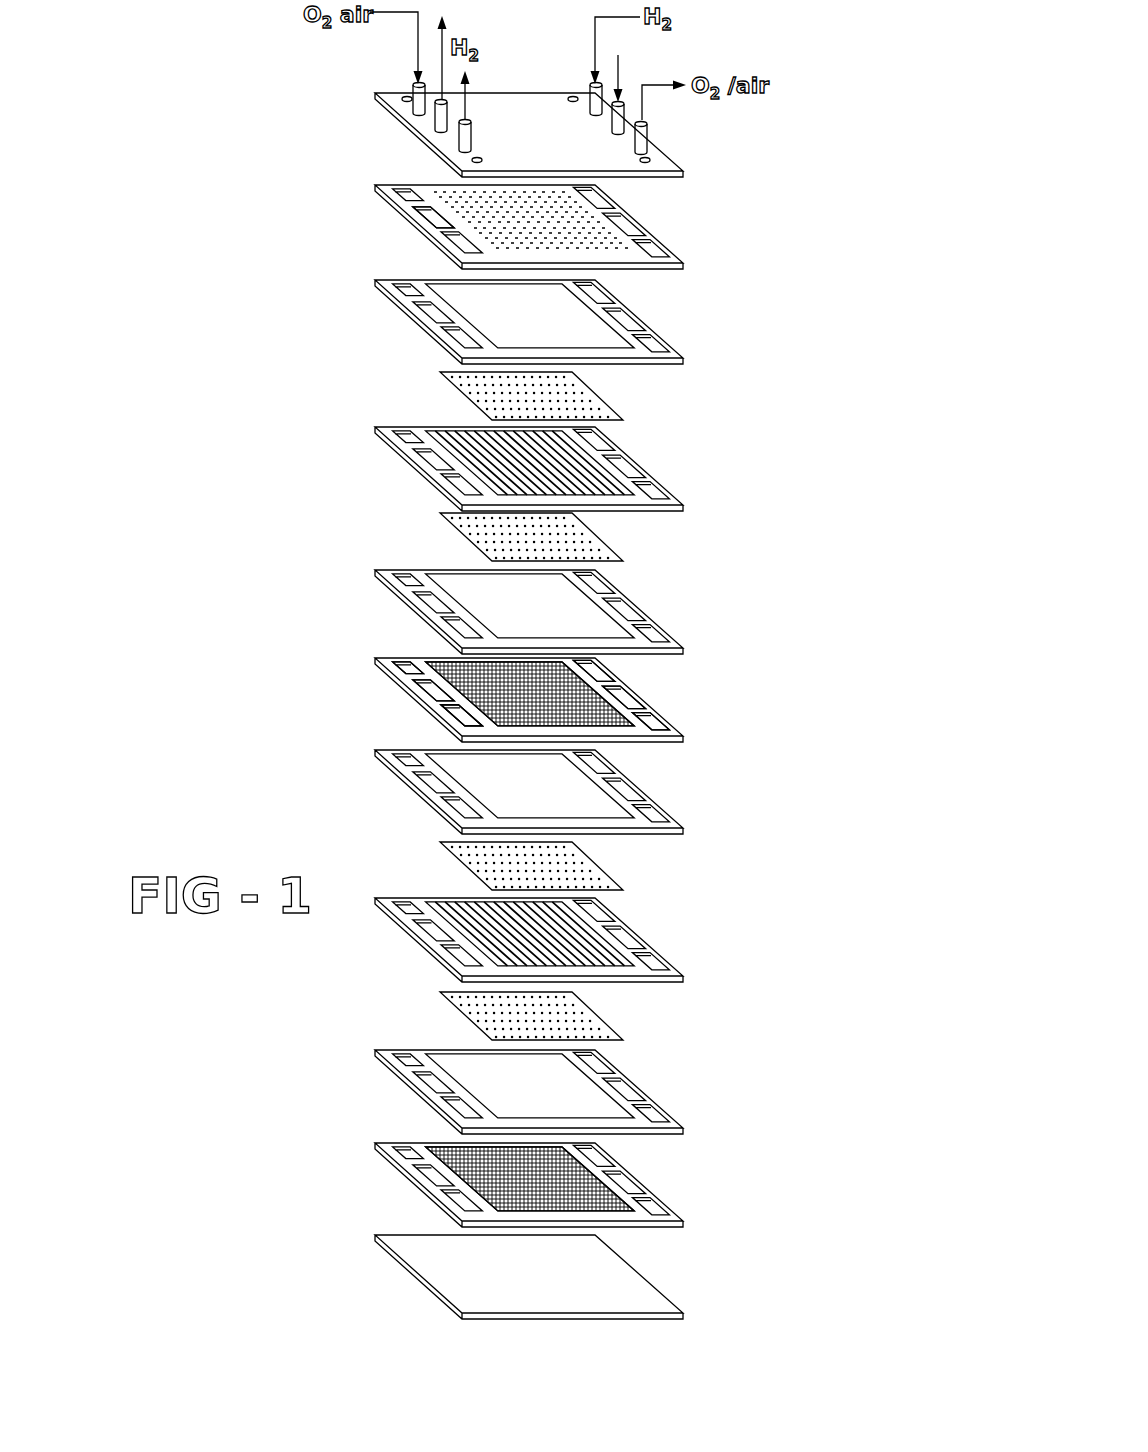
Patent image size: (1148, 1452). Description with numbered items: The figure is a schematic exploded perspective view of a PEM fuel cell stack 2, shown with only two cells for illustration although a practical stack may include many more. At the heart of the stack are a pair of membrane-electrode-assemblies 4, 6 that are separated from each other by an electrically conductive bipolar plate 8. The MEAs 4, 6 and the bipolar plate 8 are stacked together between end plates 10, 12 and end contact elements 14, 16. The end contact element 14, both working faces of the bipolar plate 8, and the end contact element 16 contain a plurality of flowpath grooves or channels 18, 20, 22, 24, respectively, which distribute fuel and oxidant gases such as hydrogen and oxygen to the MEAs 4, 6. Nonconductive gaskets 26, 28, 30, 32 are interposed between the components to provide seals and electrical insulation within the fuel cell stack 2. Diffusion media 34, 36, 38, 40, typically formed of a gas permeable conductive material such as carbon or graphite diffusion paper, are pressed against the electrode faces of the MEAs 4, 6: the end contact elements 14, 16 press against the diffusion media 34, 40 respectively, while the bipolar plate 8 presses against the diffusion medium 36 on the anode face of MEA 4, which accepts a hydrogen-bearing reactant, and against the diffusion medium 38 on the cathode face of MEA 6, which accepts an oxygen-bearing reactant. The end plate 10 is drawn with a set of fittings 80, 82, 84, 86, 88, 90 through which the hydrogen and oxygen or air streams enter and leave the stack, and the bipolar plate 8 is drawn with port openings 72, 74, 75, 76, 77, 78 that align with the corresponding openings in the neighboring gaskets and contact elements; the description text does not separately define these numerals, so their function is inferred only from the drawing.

The PEM fuel cell stack 2 is at (808, 409).
The membrane-electrode-assembly 4 is at (400, 463).
The membrane-electrode-assembly 6 is at (650, 925).
The bipolar plate 8 is at (380, 678).
The end plate 10 is at (400, 133).
The end plate 12 is at (655, 1282).
The end contact element 14 is at (400, 223).
The end contact element 16 is at (625, 1160).
The flowpath grooves or channels 18 is at (420, 235).
The flowpath grooves or channels 20 is at (575, 690).
The flowpath grooves or channels 22 is at (475, 722).
The flowpath grooves or channels 24 is at (605, 1195).
The nonconductive gasket 26 is at (428, 290).
The nonconductive gasket 28 is at (420, 605).
The nonconductive gasket 30 is at (625, 800).
The nonconductive gasket 32 is at (615, 1085).
The diffusion medium 34 is at (478, 398).
The diffusion medium 36 is at (478, 540).
The diffusion medium 38 is at (585, 860).
The diffusion medium 40 is at (600, 1010).
The port 72 is at (405, 668).
The port 74 is at (665, 720).
The port 75 is at (630, 700).
The port 76 is at (640, 656).
The port 77 is at (430, 694).
The port 78 is at (460, 730).
The hydrogen inlet fitting 80 is at (590, 95).
The oxygen/air inlet fitting 82 is at (413, 90).
The hydrogen outlet fitting 84 is at (460, 137).
The oxygen/air outlet fitting 86 is at (650, 138).
The fitting 88 is at (623, 110).
The fitting 90 is at (435, 123).